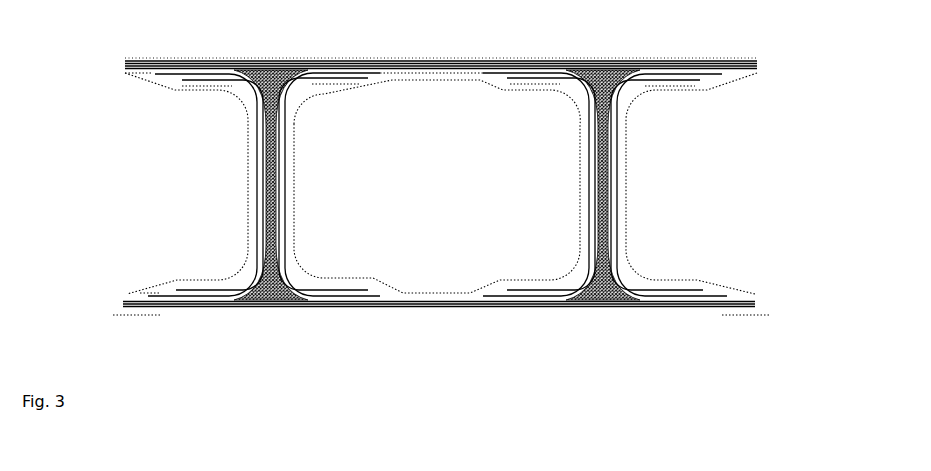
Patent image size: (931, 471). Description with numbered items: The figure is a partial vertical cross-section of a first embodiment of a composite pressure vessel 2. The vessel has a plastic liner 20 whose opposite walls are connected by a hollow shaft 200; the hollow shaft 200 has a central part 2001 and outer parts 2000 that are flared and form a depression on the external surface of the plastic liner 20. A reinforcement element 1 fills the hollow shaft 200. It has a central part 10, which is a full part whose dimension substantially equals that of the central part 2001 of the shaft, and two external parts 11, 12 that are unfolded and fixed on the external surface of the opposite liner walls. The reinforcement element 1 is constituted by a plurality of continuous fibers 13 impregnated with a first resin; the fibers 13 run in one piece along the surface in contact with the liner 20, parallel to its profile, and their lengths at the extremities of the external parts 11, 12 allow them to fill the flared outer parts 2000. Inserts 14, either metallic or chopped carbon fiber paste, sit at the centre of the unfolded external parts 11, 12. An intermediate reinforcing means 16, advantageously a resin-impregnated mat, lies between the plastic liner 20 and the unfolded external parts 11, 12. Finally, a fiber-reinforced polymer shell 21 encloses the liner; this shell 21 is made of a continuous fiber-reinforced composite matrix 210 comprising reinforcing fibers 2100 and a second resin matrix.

The reinforcement element 1 is at (789, 77).
The composite pressure vessel 2 is at (832, 58).
The central part 10 is at (627, 127).
The external part 11 is at (756, 97).
The external part 12 is at (751, 268).
The continuous fibers 13 is at (702, 80).
The insert 14 is at (605, 303).
The intermediate reinforcing means 16 is at (457, 61).
The plastic liner 20 is at (112, 71).
The fiber-reinforced polymer shell 21 is at (119, 56).
The hollow shaft 200 is at (106, 77).
The continuous fiber-reinforced composite matrix 210 is at (760, 60).
The outer part of the hollow shaft 2000 is at (526, 101).
The central part of the hollow shaft 2001 is at (572, 173).
The reinforcing fibers 2100 is at (741, 53).